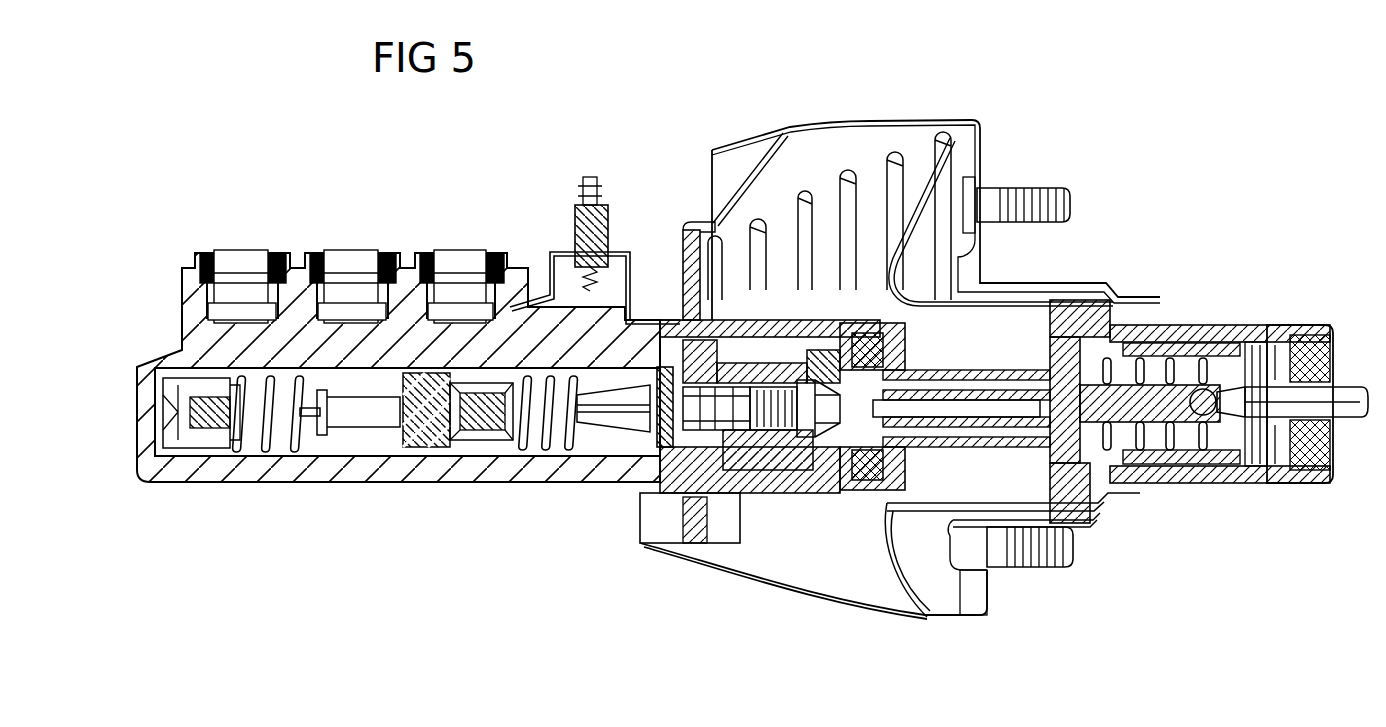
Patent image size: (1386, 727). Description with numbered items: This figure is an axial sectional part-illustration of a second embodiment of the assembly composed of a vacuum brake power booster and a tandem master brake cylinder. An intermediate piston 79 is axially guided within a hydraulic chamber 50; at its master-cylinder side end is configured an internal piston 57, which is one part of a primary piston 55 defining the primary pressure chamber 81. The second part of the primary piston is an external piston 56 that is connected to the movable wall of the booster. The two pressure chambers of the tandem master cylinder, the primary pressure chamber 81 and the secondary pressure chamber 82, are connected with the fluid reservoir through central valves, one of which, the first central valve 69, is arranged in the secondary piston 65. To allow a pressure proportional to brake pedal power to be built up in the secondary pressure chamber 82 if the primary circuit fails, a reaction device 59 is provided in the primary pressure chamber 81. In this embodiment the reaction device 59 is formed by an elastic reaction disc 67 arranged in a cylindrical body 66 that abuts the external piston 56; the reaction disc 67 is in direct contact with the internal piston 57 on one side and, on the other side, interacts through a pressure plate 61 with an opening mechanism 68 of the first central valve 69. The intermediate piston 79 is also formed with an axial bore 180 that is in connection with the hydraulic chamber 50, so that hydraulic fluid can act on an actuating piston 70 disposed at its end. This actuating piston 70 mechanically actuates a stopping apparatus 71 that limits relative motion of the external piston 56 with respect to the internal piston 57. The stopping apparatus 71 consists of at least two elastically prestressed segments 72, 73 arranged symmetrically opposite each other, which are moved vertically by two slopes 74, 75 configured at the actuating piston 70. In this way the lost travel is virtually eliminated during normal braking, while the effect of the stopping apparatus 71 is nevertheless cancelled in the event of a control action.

The hydraulic chamber 50 is at (943, 432).
The primary piston 55 is at (722, 354).
The external piston 56 is at (735, 445).
The internal piston 57 is at (690, 447).
The reaction device 59 is at (665, 345).
The pressure plate 61 is at (605, 448).
The secondary piston 65 is at (407, 448).
The cylindrical body 66 is at (656, 534).
The elastic reaction disc 67 is at (645, 472).
The opening mechanism 68 is at (580, 445).
The first central valve 69 is at (447, 450).
The actuating piston 70 is at (852, 375).
The stopping apparatus 71 is at (797, 445).
The elastically prestressed segment 72 is at (805, 410).
The elastically prestressed segment 73 is at (812, 447).
The slope 74 is at (828, 400).
The slope 75 is at (828, 447).
The intermediate piston 79 is at (1090, 440).
The primary pressure chamber 81 is at (493, 448).
The secondary pressure chamber 82 is at (250, 452).
The axial bore 180 is at (1000, 414).